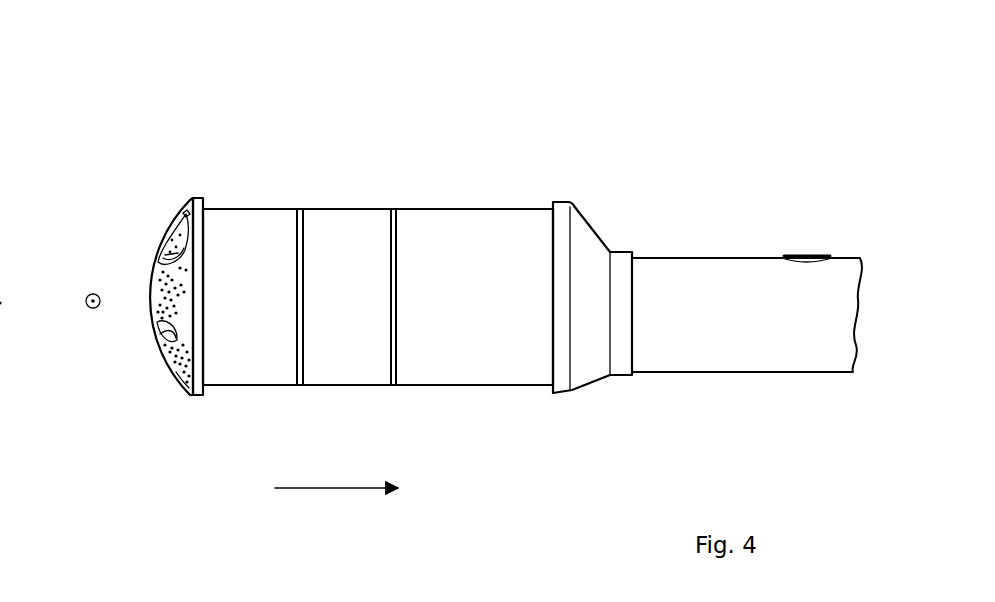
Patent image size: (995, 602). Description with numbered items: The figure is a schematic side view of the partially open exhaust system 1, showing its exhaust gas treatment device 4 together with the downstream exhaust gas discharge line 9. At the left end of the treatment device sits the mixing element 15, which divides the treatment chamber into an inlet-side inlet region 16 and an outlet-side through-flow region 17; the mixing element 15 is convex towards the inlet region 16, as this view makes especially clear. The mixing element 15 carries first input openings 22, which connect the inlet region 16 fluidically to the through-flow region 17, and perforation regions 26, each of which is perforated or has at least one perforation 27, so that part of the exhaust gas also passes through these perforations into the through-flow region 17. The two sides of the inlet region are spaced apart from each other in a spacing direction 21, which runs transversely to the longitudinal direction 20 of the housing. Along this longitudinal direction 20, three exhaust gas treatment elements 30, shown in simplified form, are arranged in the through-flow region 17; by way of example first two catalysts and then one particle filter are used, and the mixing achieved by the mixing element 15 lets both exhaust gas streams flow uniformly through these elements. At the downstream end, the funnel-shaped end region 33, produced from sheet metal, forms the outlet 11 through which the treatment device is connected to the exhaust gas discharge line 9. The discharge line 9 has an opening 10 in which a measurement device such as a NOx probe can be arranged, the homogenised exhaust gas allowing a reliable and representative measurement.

The exhaust system 1 is at (657, 150).
The exhaust gas treatment device 4 is at (418, 155).
The exhaust gas discharge line 9 is at (716, 256).
The opening 10 is at (805, 254).
The outlet 11 is at (633, 270).
The mixing element 15 is at (195, 196).
The inlet region 16 is at (166, 210).
The through-flow region 17 is at (350, 205).
The longitudinal direction 20 is at (340, 490).
The spacing direction 21 is at (86, 301).
The first input openings 22 is at (158, 250).
The perforation regions 26 is at (150, 275).
The perforation 27 is at (175, 380).
The exhaust gas treatment elements 30 is at (248, 378).
The funnel-shaped end region 33 is at (588, 240).